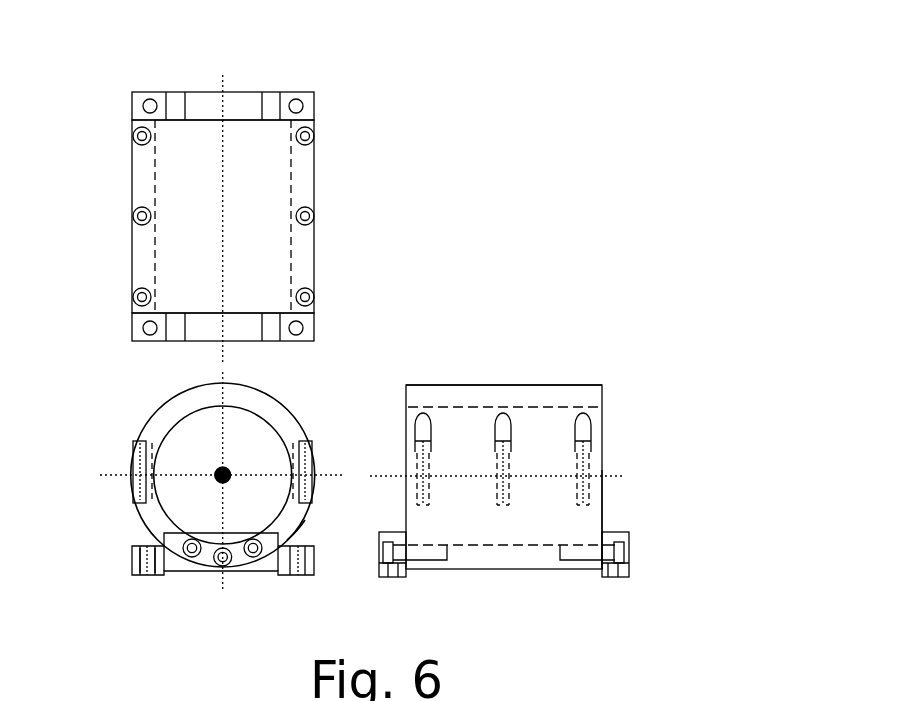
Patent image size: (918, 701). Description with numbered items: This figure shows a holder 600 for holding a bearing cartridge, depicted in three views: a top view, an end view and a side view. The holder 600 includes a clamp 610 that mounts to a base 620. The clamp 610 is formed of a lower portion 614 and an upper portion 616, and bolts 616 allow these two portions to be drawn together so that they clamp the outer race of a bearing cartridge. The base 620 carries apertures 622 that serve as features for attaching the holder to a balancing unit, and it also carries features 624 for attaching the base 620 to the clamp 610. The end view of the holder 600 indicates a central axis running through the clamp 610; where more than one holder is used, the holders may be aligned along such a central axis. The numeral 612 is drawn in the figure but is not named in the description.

The holder 600 is at (530, 102).
The clamp 610 is at (210, 221).
The cylindrical bore 612 is at (284, 405).
The lower portion 614 is at (300, 522).
The upper portion 616 is at (138, 135).
The base 620 is at (150, 92).
The apertures 622 is at (296, 106).
The features for attachment to the clamp 624 is at (192, 558).